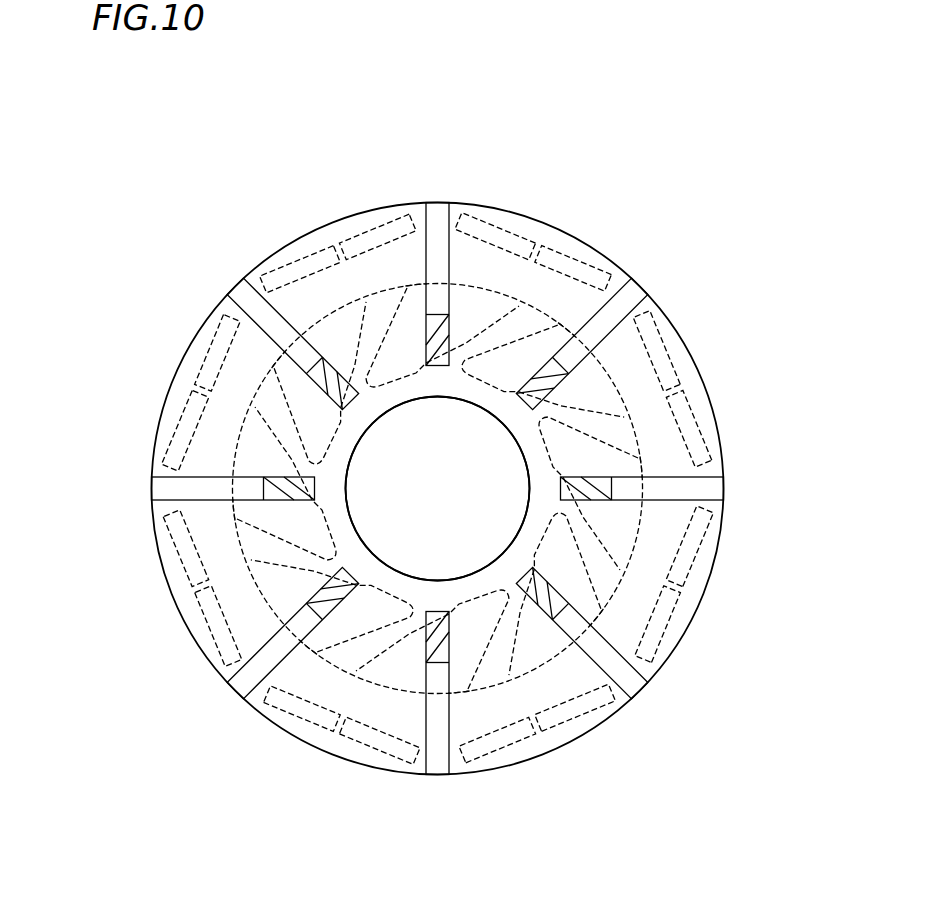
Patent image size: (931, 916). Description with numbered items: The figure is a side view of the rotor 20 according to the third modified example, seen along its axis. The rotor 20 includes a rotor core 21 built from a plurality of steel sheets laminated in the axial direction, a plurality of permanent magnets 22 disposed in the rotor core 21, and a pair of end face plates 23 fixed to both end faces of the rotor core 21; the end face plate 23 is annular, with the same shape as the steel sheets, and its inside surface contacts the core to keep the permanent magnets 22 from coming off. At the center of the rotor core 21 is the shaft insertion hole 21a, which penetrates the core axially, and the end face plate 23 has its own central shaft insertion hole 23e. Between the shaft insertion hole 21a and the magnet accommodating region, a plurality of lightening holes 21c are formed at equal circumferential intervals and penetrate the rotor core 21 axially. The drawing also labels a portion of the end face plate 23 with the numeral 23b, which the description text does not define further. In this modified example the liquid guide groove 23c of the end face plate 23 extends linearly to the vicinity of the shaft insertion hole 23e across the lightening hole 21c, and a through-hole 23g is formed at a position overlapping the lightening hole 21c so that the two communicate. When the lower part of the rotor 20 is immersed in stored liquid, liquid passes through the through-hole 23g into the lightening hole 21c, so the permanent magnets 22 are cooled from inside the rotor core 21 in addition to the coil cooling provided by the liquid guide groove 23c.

The rotor 20 is at (535, 116).
The rotor core 21 is at (260, 717).
The shaft insertion hole 21a is at (447, 401).
The lightening hole 21c is at (372, 680).
The permanent magnet 22 is at (720, 560).
The end face plate 23 is at (622, 267).
The cover portion 23b is at (627, 367).
The liquid guide groove 23c is at (345, 377).
The shaft insertion hole 23e is at (350, 522).
The through-hole 23g is at (437, 345).